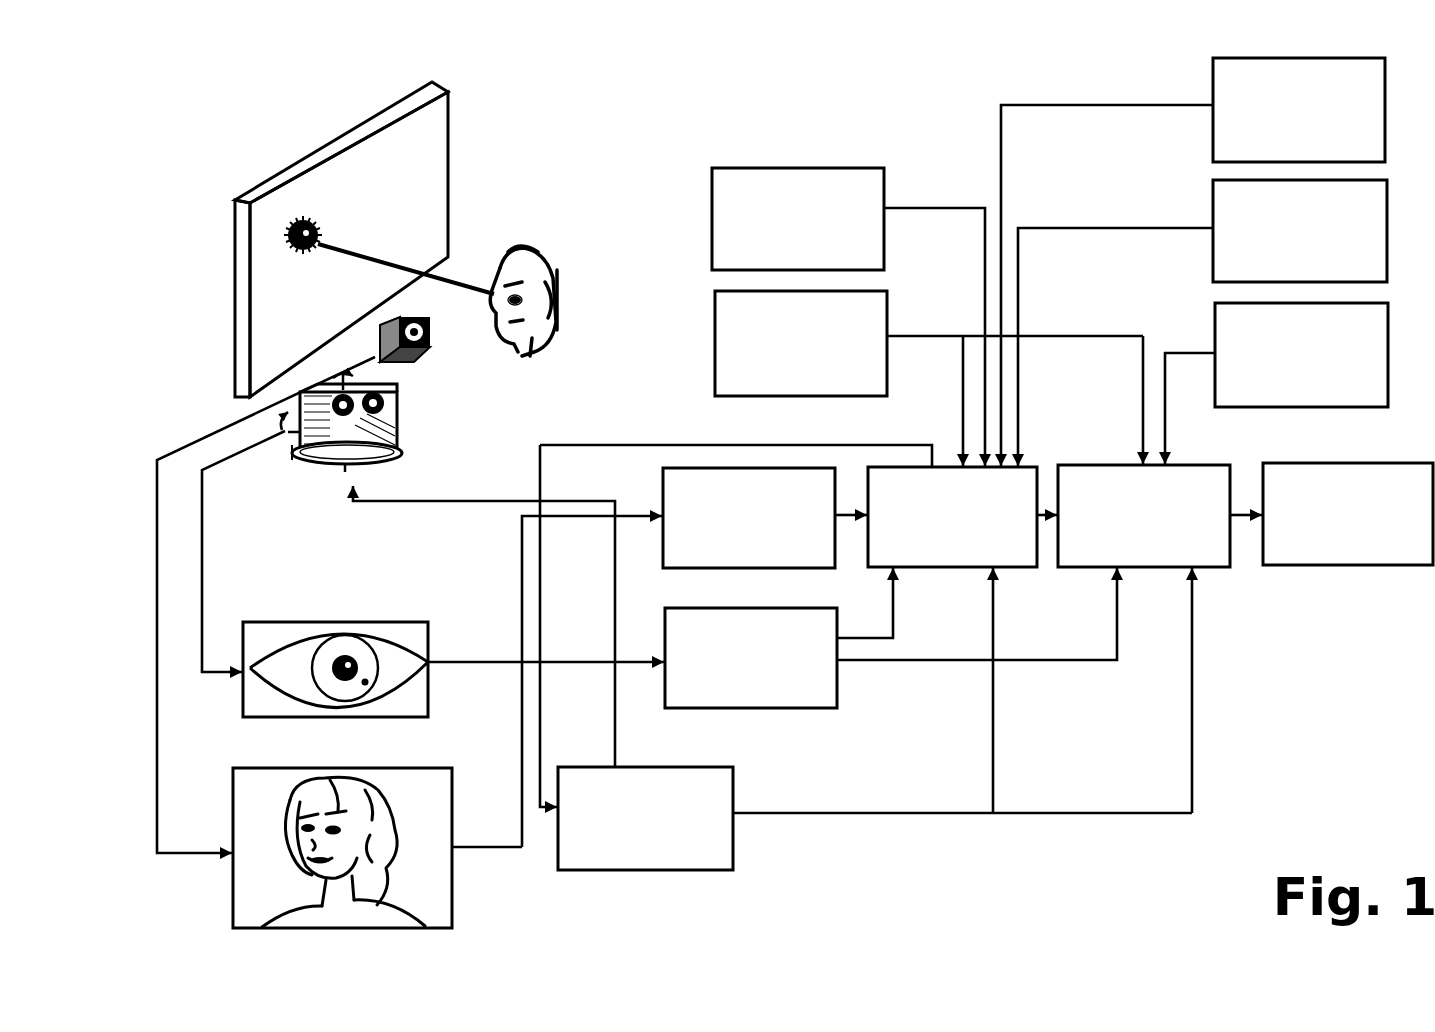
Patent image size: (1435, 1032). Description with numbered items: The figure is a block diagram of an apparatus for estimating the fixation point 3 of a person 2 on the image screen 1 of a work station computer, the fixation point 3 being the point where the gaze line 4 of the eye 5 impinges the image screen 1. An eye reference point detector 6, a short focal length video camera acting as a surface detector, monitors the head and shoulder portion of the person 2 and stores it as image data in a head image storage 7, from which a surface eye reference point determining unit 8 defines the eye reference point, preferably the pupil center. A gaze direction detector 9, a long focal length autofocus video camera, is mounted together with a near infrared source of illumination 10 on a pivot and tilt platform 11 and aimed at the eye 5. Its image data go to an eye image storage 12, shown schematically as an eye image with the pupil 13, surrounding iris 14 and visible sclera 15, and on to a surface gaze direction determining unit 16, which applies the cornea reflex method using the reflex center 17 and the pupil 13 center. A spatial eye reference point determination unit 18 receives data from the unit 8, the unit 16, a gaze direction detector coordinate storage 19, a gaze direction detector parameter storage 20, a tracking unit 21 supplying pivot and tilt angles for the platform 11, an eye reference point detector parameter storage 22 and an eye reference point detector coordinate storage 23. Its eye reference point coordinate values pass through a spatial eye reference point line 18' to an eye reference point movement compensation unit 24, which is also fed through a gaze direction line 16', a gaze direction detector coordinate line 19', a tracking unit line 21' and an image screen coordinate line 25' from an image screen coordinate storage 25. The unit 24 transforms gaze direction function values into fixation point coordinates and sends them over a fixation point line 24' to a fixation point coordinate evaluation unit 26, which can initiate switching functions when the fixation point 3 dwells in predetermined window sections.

The image screen 1 is at (420, 128).
The person 2 is at (524, 242).
The fixation point 3 is at (292, 207).
The gaze line 4 is at (459, 273).
The eye 5 is at (521, 320).
The eye reference point detector 6 is at (400, 362).
The head image storage 7 is at (455, 888).
The surface eye reference point determining unit 8 is at (737, 537).
The gaze direction detector 9 is at (395, 398).
The source of illumination 10 is at (326, 464).
The pivot and tilt platform 11 is at (291, 461).
The eye image storage 12 is at (278, 622).
The pupil 13 is at (351, 666).
The iris 14 is at (373, 677).
The sclera 15 is at (398, 672).
The surface gaze direction determining unit 16 is at (751, 658).
The gaze direction line 16' is at (886, 644).
The reflex center 17 is at (358, 688).
The spatial eye reference point determination unit 18 is at (952, 517).
The spatial eye reference point line 18' is at (1047, 570).
The gaze direction detector coordinate storage 19 is at (801, 343).
The gaze direction detector coordinate line 19' is at (1100, 400).
The gaze direction detector parameter storage 20 is at (775, 238).
The tracking unit 21 is at (645, 818).
The tracking unit line 21' is at (1232, 690).
The eye reference point detector parameter storage 22 is at (1276, 129).
The eye reference point detector coordinate storage 23 is at (1277, 250).
The eye reference point movement compensation unit 24 is at (1144, 516).
The fixation point line 24' is at (1247, 569).
The image screen coordinate storage 25 is at (1301, 355).
The image screen coordinate line 25' is at (1216, 408).
The fixation point coordinate evaluation unit 26 is at (1325, 533).